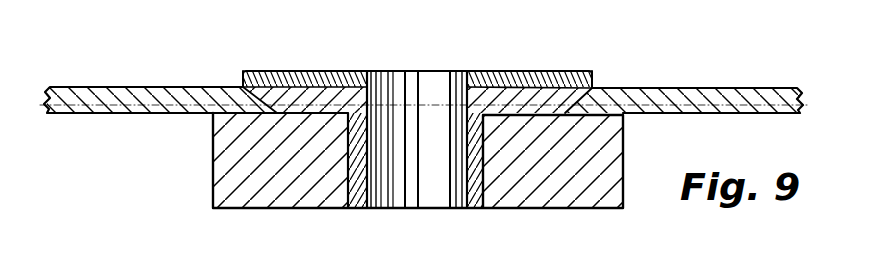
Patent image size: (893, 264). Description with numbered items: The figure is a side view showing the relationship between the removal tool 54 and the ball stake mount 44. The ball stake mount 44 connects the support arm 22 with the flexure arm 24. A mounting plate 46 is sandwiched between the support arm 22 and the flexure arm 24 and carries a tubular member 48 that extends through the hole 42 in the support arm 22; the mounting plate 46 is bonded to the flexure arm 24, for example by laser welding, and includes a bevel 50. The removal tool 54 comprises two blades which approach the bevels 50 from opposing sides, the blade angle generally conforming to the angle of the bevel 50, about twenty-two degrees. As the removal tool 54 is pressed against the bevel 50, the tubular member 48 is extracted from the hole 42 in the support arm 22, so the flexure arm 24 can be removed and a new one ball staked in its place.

The support arm 22 is at (557, 178).
The flexure arm 24 is at (411, 71).
The hole 42 is at (354, 204).
The ball stake mount 44 is at (320, 52).
The mounting plate 46 is at (496, 72).
The tubular member 48 is at (430, 172).
The bevel 50 is at (245, 72).
The removal tool 54 is at (128, 84).